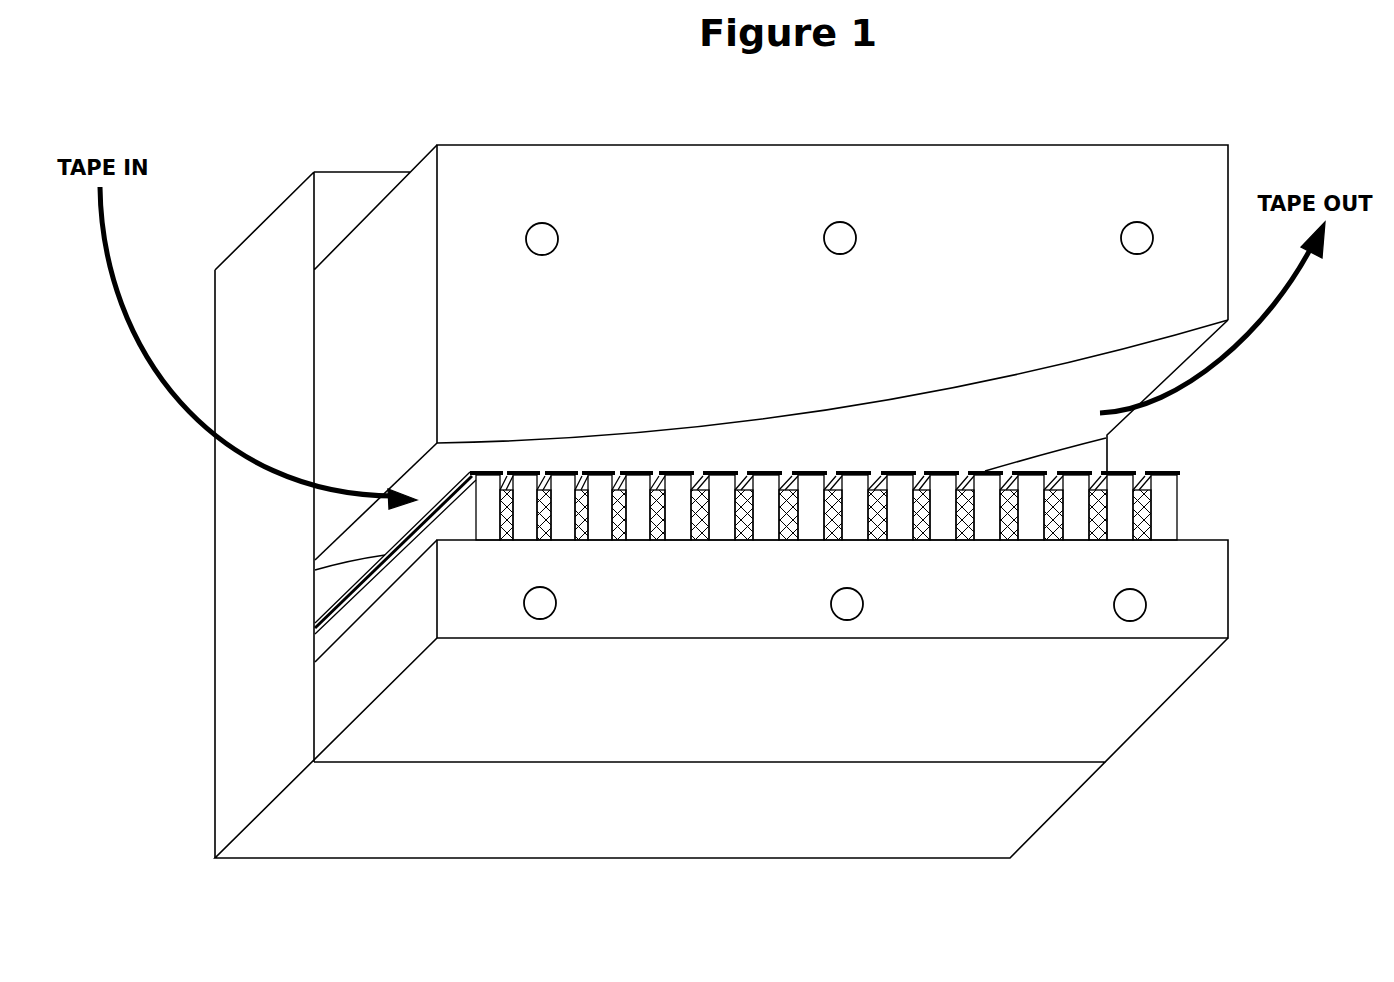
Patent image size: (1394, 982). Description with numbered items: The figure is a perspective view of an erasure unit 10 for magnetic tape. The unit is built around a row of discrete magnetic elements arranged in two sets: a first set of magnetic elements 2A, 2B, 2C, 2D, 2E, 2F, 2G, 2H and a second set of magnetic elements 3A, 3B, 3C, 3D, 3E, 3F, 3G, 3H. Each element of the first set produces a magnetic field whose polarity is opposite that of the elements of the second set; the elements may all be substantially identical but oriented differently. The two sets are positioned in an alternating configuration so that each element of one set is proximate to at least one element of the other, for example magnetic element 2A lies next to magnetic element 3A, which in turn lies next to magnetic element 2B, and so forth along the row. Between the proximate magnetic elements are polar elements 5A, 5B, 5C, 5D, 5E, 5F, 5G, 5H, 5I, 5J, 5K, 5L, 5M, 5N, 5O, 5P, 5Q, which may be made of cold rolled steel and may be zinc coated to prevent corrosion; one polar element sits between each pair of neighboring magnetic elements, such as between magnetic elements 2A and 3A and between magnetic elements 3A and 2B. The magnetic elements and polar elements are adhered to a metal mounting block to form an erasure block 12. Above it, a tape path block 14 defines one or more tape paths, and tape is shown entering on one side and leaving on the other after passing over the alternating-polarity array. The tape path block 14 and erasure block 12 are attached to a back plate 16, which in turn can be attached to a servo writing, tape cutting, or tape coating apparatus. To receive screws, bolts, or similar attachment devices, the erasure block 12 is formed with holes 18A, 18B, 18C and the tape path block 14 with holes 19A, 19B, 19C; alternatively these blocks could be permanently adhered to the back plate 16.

The erasure unit 10 is at (1050, 100).
The erasure block 12 is at (1153, 690).
The tape path block 14 is at (593, 165).
The back plate 16 is at (331, 203).
The hole 18A is at (552, 615).
The hole 18B is at (858, 617).
The hole 18C is at (1119, 618).
The hole 19A is at (558, 234).
The hole 19B is at (856, 233).
The hole 19C is at (1122, 229).
The polar element 5A is at (497, 470).
The polar element 5B is at (534, 470).
The polar element 5C is at (572, 470).
The polar element 5D is at (608, 470).
The polar element 5E is at (644, 470).
The polar element 5F is at (681, 470).
The polar element 5G is at (726, 470).
The polar element 5H is at (769, 470).
The polar element 5I is at (814, 470).
The polar element 5J is at (858, 470).
The polar element 5K is at (903, 470).
The polar element 5L is at (946, 470).
The polar element 5M is at (990, 470).
The polar element 5N is at (1031, 470).
The polar element 5O is at (1075, 470).
The polar element 5P is at (1095, 474).
The polar element 5Q is at (1177, 485).
The magnetic element 2A is at (507, 540).
The magnetic element 2B is at (587, 540).
The magnetic element 2C is at (660, 540).
The magnetic element 2D is at (745, 540).
The magnetic element 2E is at (838, 540).
The magnetic element 2F is at (920, 540).
The magnetic element 2G is at (1009, 540).
The magnetic element 2H is at (1097, 540).
The magnetic element 3A is at (545, 540).
The magnetic element 3B is at (620, 540).
The magnetic element 3C is at (700, 540).
The magnetic element 3D is at (790, 540).
The magnetic element 3E is at (874, 540).
The magnetic element 3F is at (963, 540).
The magnetic element 3G is at (1050, 540).
The magnetic element 3H is at (1146, 540).